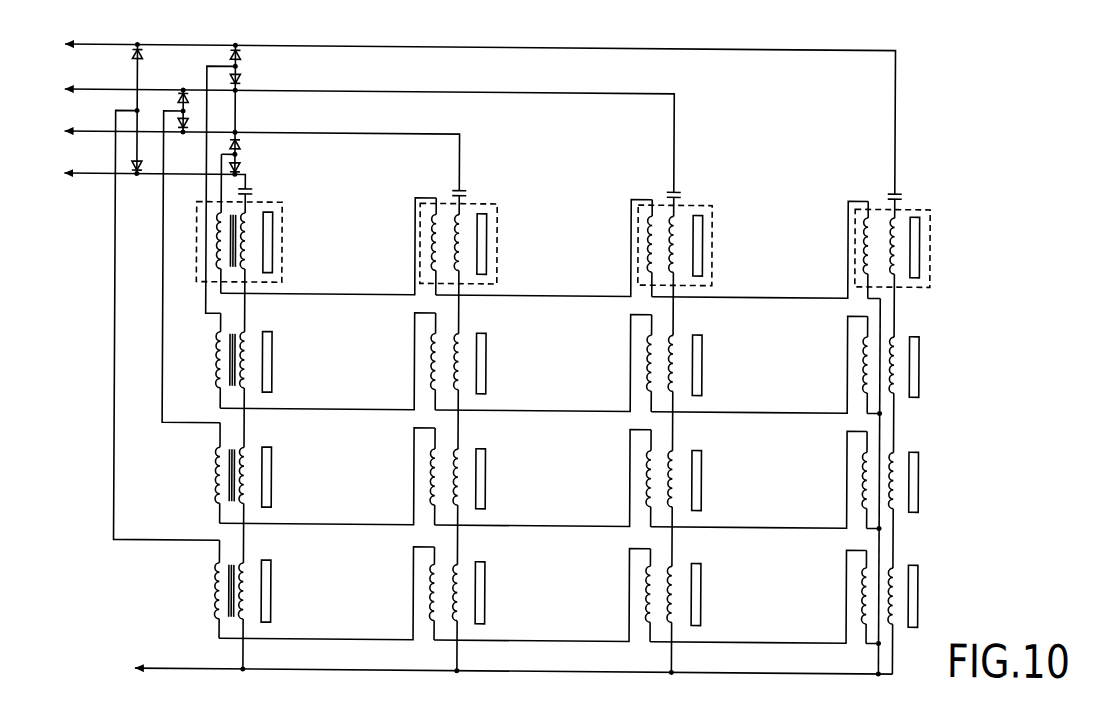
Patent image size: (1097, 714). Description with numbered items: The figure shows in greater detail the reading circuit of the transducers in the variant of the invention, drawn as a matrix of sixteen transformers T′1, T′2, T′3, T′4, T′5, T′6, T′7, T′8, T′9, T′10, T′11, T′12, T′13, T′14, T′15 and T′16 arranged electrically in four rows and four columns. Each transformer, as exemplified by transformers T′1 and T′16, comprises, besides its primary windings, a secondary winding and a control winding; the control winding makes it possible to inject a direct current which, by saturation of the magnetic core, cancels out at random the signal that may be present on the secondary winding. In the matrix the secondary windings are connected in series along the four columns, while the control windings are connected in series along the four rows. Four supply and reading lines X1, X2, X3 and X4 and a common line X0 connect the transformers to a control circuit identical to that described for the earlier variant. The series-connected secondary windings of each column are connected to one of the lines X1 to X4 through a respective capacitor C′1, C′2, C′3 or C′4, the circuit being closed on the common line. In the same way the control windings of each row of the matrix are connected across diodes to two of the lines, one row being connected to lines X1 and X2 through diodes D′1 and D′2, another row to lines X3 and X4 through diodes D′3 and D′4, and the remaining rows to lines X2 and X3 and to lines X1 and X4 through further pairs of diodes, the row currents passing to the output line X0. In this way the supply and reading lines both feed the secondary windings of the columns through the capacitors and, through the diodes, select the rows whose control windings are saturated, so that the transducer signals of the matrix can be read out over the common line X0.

The common line X0 is at (494, 667).
The supply and reading line X1 is at (137, 179).
The supply and reading line X2 is at (245, 154).
The supply and reading line X3 is at (352, 134).
The supply and reading line X4 is at (463, 112).
The capacitor C′1 is at (253, 189).
The capacitor C′2 is at (467, 190).
The capacitor C′3 is at (682, 189).
The capacitor C′4 is at (903, 188).
The diode D′1 is at (241, 164).
The diode D′2 is at (241, 141).
The diode D′3 is at (241, 79).
The diode D′4 is at (240, 51).
The transformer T′1 is at (283, 246).
The transformer T′2 is at (291, 358).
The transformer T′3 is at (293, 483).
The transformer T′4 is at (291, 591).
The transformer T′5 is at (498, 240).
The transformer T′6 is at (506, 361).
The transformer T′7 is at (506, 481).
The transformer T′8 is at (523, 581).
The transformer T′9 is at (716, 242).
The transformer T′10 is at (716, 362).
The transformer T′11 is at (716, 479).
The transformer T′12 is at (716, 597).
The transformer T′13 is at (934, 240).
The transformer T′14 is at (930, 360).
The transformer T′15 is at (933, 478).
The transformer T′16 is at (956, 578).